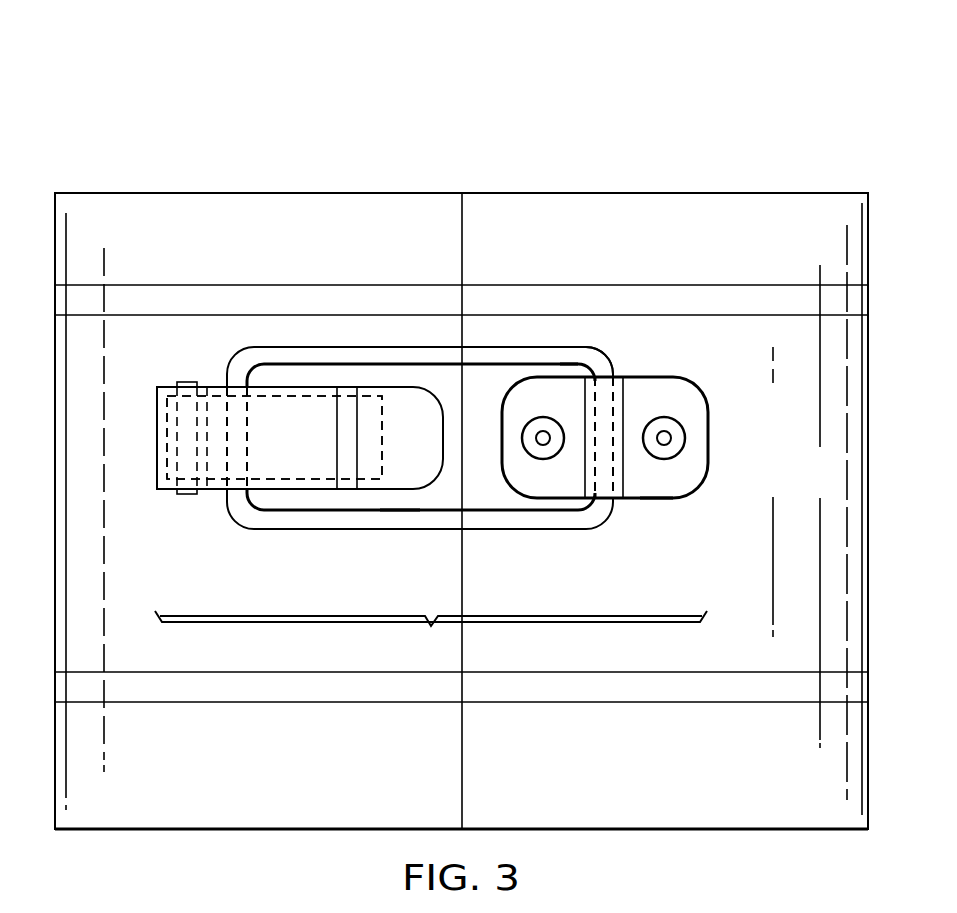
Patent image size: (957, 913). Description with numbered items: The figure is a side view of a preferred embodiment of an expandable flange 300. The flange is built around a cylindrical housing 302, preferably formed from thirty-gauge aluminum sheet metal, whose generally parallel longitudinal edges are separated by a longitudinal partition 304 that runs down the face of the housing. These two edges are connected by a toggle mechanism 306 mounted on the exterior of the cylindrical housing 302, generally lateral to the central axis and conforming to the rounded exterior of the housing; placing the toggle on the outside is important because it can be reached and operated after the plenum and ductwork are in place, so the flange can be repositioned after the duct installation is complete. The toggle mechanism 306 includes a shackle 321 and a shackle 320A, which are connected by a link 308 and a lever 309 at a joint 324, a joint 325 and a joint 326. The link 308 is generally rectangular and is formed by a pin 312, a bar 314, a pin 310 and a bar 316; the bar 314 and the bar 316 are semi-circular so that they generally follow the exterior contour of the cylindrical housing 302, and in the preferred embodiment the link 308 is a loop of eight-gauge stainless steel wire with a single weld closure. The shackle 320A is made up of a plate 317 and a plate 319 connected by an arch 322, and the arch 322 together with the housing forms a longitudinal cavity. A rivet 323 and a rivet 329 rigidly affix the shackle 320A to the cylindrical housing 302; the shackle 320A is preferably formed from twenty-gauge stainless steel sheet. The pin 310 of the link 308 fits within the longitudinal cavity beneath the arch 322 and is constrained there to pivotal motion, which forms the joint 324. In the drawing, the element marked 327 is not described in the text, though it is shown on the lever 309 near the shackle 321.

The expandable flange 300 is at (331, 74).
The cylindrical housing 302 is at (634, 194).
The longitudinal partition 304 is at (465, 208).
The toggle mechanism 306 is at (431, 638).
The link 308 is at (563, 529).
The lever 309 is at (157, 429).
The pin 310 is at (610, 377).
The pin 312 is at (226, 381).
The bar 314 is at (483, 343).
The bar 316 is at (442, 530).
The plate 317 is at (550, 390).
The plate 319 is at (677, 495).
The shackle 320A is at (708, 452).
The shackle 321 is at (293, 418).
The arch 322 is at (633, 490).
The rivet 323 is at (541, 460).
The joint 324 is at (612, 364).
The joint 325 is at (225, 492).
The joint 326 is at (177, 384).
The inner wall 327 is at (402, 473).
The rivet 329 is at (686, 438).